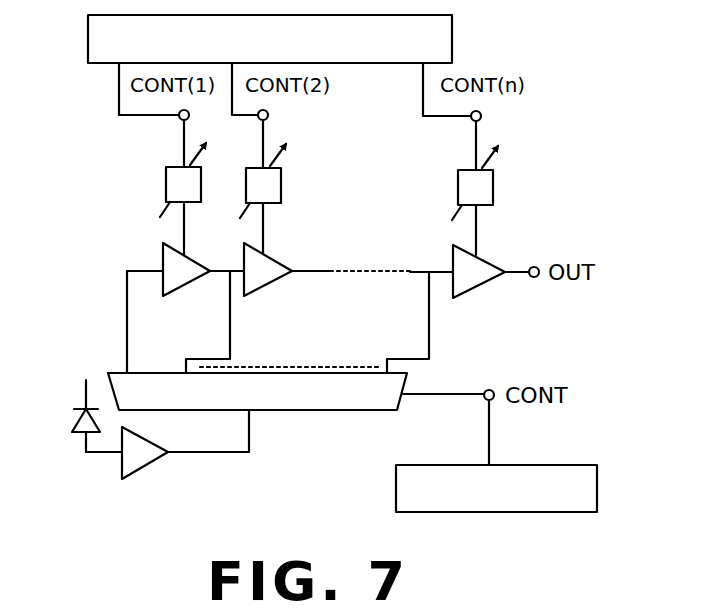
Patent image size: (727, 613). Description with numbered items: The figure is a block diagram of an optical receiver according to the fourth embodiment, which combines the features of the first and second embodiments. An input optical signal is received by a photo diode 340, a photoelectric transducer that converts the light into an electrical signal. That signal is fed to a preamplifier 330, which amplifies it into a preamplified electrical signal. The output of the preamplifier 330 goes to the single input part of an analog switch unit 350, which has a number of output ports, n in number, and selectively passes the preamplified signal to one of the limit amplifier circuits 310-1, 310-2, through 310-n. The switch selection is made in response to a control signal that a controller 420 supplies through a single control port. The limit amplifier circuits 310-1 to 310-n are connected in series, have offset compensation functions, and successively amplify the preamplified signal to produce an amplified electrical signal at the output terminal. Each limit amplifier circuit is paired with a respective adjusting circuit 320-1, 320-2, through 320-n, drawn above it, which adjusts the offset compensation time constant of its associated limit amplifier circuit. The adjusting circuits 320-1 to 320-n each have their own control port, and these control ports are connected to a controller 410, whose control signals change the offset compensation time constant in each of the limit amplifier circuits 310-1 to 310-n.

The controller 410 is at (452, 40).
The controller 420 is at (597, 490).
The adjusting circuit 320-1 is at (166, 172).
The adjusting circuit 320-2 is at (281, 172).
The adjusting circuit 320-n is at (458, 172).
The limit amplifier circuit 310-1 is at (190, 290).
The limit amplifier circuit 310-2 is at (270, 290).
The limit amplifier circuit 310-n is at (478, 290).
The analog switch unit 350 is at (365, 412).
The photo diode 340 is at (80, 432).
The preamplifier 330 is at (143, 470).